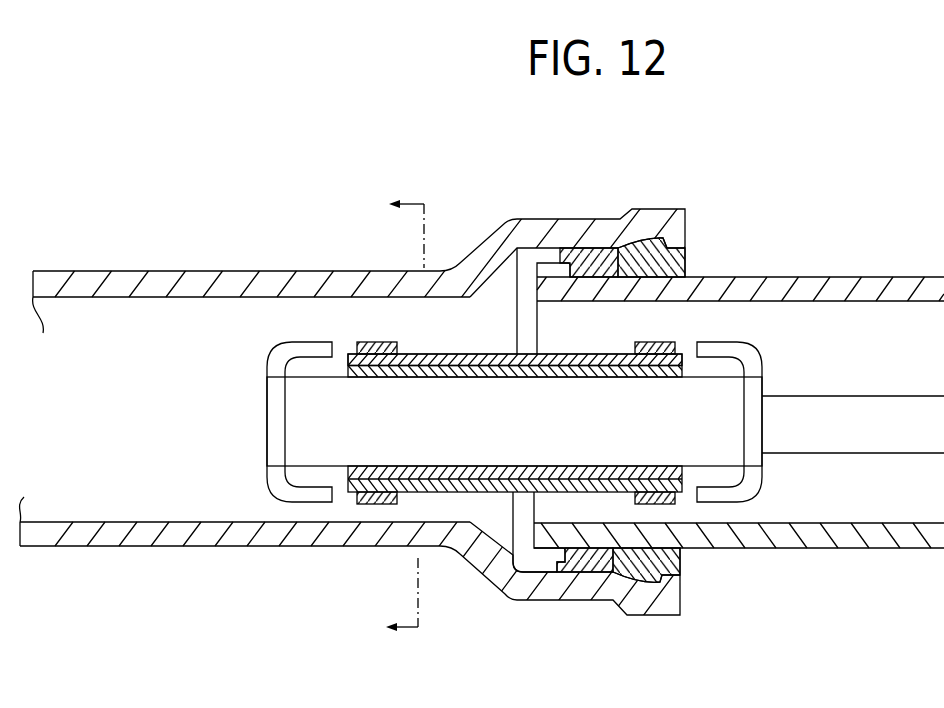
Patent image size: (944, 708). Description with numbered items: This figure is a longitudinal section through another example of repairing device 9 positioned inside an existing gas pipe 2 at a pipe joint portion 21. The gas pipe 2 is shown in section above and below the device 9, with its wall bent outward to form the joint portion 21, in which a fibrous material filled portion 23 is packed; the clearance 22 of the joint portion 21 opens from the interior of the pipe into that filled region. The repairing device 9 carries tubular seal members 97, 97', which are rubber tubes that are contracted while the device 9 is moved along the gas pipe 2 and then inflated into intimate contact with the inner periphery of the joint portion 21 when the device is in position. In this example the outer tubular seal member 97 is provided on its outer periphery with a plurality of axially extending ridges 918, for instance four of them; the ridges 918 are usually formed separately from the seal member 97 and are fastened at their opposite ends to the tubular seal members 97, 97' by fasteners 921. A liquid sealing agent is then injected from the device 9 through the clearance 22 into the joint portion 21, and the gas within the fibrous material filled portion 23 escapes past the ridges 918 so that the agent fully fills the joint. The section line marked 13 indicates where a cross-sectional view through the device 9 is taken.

The gas pipe 2 is at (913, 276).
The repairing device 9 is at (783, 379).
The section line 13 is at (386, 420).
The joint portion 21 is at (667, 209).
The clearance 22 is at (525, 276).
The fibrous material filled portion 23 is at (590, 258).
The outer tubular seal member 97 is at (515, 333).
The inner tubular seal member 97' is at (644, 402).
The ridges 918 is at (453, 353).
The fasteners 921 is at (372, 342).